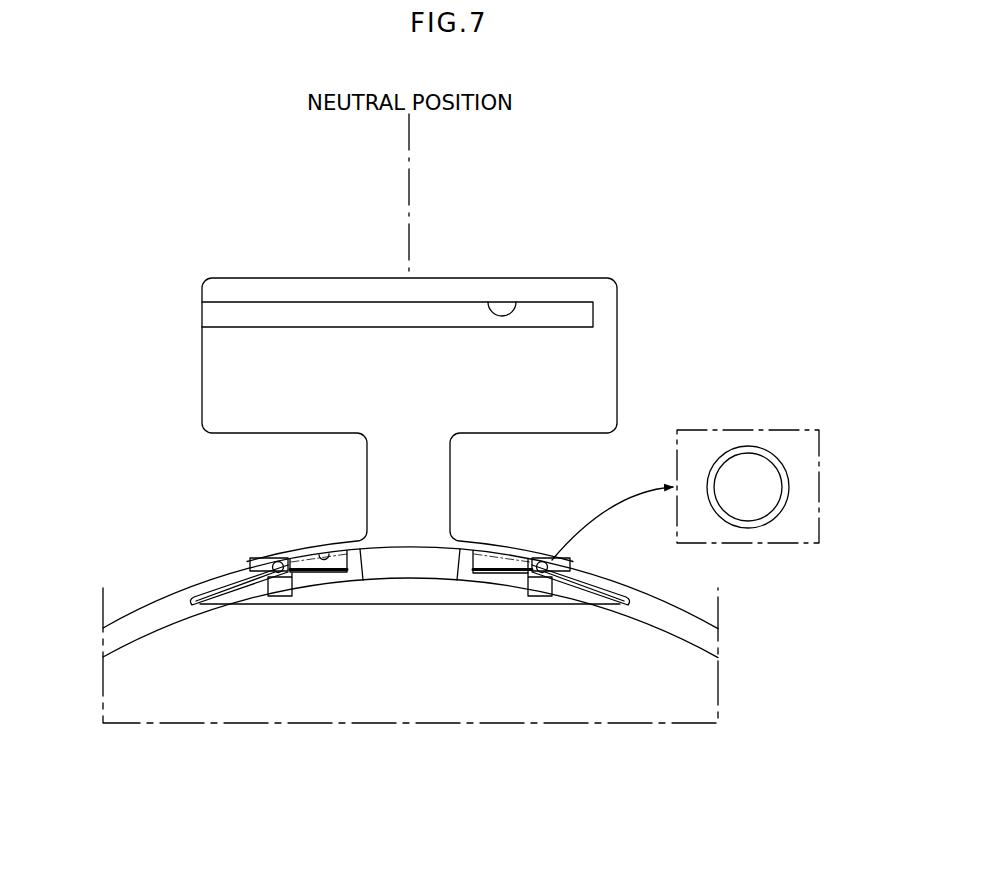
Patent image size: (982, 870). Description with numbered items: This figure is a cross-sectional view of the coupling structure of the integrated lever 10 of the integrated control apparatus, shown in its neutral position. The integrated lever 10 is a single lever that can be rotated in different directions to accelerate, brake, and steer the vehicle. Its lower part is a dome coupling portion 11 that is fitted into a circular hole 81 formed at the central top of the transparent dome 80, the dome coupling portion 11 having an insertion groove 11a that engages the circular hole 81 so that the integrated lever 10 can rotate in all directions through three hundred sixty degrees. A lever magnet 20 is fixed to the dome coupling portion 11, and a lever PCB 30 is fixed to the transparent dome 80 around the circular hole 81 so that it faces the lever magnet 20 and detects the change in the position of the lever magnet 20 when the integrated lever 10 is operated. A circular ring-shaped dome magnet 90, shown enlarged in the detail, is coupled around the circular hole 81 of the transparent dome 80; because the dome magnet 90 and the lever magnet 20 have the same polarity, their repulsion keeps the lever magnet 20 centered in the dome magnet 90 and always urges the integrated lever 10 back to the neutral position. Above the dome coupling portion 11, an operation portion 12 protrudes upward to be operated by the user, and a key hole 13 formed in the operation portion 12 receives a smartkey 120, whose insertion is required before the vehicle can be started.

The integrated lever 10 is at (575, 272).
The dome coupling portion 11 is at (480, 542).
The insertion groove 11a is at (320, 558).
The operation portion 12 is at (317, 290).
The smartkey 120 is at (258, 312).
The key hole 13 is at (514, 308).
The lever magnet 20 is at (411, 560).
The lever PCB 30 is at (566, 598).
The transparent dome 80 is at (165, 700).
The circular hole 81 is at (527, 565).
The dome magnet 90 is at (748, 447).